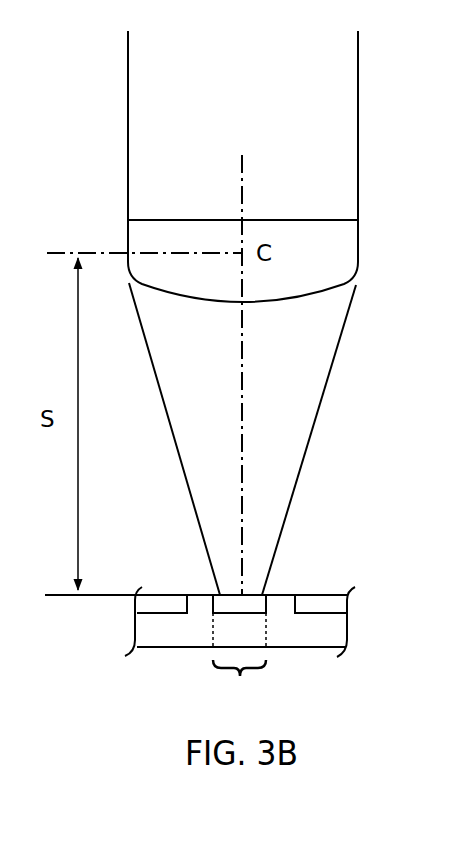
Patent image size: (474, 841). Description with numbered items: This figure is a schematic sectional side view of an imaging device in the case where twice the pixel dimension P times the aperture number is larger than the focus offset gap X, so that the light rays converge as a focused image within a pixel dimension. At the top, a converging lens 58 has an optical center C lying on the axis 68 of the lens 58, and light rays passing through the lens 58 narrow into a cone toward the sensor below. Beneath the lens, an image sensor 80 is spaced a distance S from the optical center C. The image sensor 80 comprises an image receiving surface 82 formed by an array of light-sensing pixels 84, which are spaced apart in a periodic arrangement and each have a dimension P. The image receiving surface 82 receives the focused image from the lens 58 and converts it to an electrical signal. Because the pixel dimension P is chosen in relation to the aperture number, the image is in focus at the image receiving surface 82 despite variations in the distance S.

The lens 58 is at (370, 250).
The axis 68 is at (250, 191).
The image sensor 80 is at (366, 627).
The image receiving surface 82 is at (152, 588).
The light-sensing pixels 84 is at (249, 585).